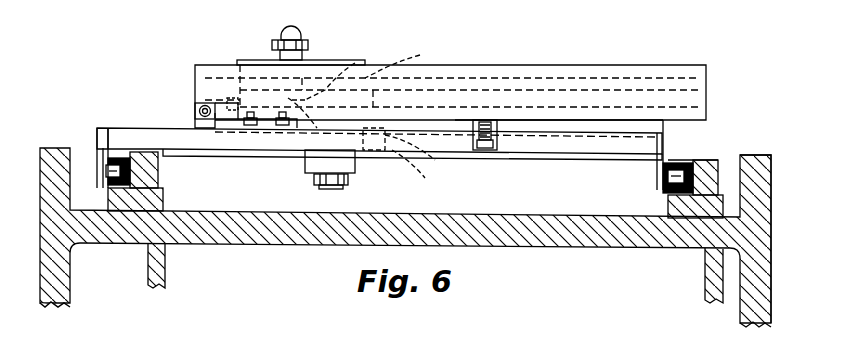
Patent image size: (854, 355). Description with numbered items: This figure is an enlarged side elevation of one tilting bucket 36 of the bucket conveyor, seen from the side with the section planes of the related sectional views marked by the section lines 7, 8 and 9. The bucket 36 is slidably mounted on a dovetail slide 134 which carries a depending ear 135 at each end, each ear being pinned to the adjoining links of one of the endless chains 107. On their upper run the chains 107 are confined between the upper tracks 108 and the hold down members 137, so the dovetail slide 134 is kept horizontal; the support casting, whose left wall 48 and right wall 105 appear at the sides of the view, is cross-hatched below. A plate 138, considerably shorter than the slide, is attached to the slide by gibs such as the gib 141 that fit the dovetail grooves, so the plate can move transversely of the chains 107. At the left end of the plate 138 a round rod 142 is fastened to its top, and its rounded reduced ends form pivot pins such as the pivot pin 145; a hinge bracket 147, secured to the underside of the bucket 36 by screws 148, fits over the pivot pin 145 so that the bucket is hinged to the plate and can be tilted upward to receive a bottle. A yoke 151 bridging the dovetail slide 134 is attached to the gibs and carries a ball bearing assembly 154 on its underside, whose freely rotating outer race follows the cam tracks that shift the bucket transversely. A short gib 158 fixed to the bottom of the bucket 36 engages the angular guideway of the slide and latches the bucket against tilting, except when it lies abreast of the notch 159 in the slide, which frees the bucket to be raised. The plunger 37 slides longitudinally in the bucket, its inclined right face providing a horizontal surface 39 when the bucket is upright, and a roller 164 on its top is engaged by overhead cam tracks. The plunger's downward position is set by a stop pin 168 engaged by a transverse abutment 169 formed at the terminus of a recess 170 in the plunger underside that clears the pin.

The section line 7- 7 is at (228, 24).
The section line 8- 8 is at (467, 47).
The section line 9- 9 is at (366, 47).
The bucket 36 is at (620, 66).
The plunger 37 is at (355, 60).
The horizontal surface 39 is at (401, 59).
The left wall 48 is at (70, 288).
The right wall 105 is at (740, 306).
The endless chains 107 is at (108, 180).
The upper tracks 108 is at (117, 211).
The dovetail slide 134 is at (133, 130).
The depending ear 135 is at (95, 155).
The hold down members 137 is at (110, 152).
The plate 138 is at (410, 152).
The gib 141 is at (250, 150).
The round rod 142 is at (200, 103).
The pivot pin 145 is at (195, 108).
The hinge bracket 147 is at (212, 124).
The screws 148 is at (258, 127).
The yoke 151 is at (305, 168).
The ball bearing assembly 154 is at (314, 180).
The short gib 158 is at (497, 135).
The notch 159 is at (418, 173).
The roller 164 is at (272, 47).
The stop pin 168 is at (230, 105).
The transverse abutment 169 is at (305, 100).
The recess 170 is at (318, 123).